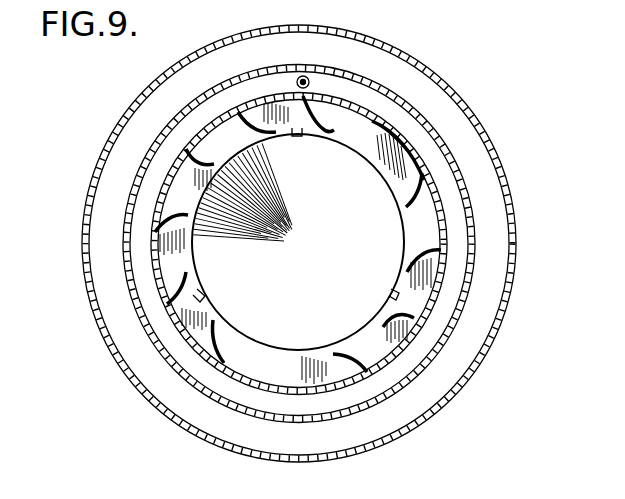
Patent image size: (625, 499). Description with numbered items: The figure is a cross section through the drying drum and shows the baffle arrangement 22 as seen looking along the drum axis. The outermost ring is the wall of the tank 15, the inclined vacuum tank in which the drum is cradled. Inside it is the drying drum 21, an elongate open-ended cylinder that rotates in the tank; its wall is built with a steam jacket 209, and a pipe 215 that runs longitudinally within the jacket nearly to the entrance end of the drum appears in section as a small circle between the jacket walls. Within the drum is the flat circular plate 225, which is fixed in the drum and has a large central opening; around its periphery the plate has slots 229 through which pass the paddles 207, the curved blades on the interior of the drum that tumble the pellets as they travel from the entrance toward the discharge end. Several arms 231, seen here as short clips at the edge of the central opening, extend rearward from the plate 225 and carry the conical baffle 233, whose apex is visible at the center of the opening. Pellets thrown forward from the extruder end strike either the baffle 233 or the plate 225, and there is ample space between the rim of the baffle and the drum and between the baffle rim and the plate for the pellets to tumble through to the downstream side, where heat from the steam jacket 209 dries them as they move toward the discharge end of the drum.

The tank 15 is at (151, 98).
The pipe 215 is at (296, 82).
The drying drum 21 is at (393, 123).
The slots 229 is at (187, 148).
The baffle arrangement 22 is at (254, 145).
The arms 231 is at (294, 137).
The paddles 207 is at (326, 138).
The steam jacket 209 is at (124, 223).
The flat circular plate 225 is at (430, 230).
The conical baffle 233 is at (300, 272).